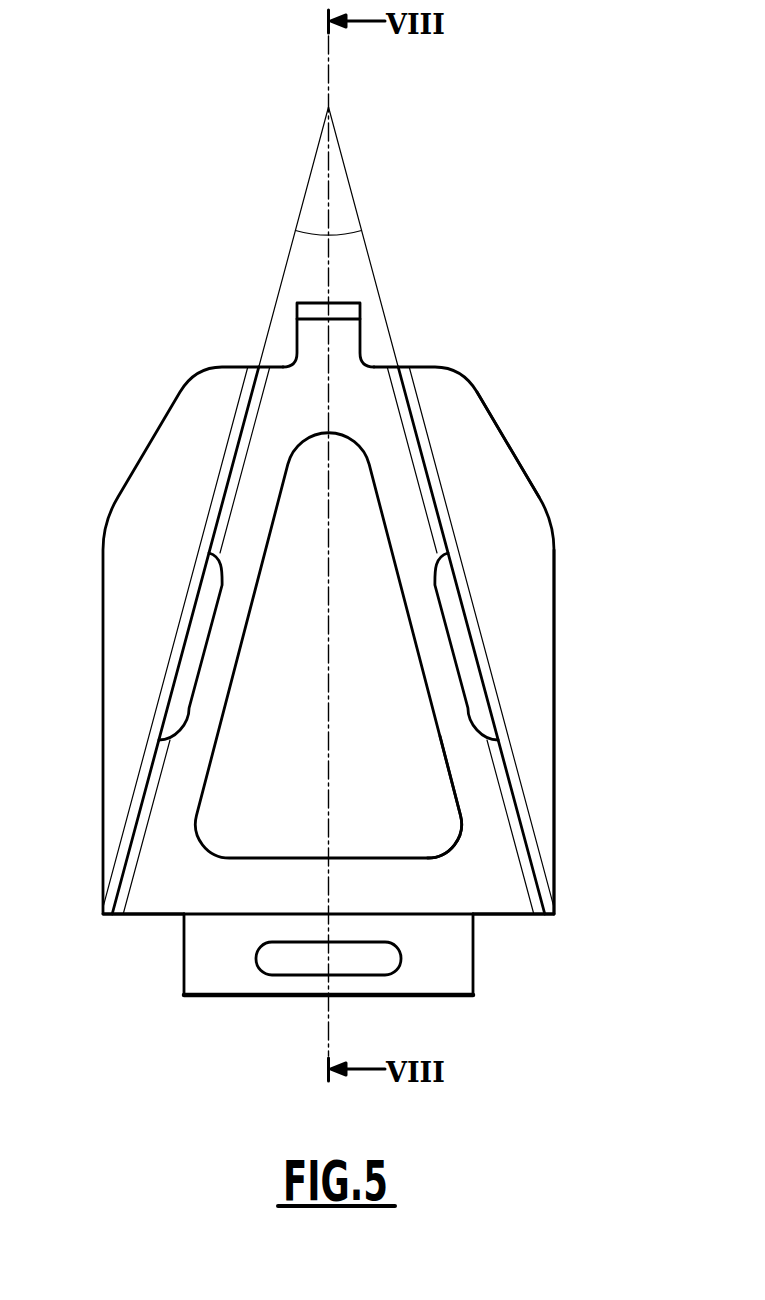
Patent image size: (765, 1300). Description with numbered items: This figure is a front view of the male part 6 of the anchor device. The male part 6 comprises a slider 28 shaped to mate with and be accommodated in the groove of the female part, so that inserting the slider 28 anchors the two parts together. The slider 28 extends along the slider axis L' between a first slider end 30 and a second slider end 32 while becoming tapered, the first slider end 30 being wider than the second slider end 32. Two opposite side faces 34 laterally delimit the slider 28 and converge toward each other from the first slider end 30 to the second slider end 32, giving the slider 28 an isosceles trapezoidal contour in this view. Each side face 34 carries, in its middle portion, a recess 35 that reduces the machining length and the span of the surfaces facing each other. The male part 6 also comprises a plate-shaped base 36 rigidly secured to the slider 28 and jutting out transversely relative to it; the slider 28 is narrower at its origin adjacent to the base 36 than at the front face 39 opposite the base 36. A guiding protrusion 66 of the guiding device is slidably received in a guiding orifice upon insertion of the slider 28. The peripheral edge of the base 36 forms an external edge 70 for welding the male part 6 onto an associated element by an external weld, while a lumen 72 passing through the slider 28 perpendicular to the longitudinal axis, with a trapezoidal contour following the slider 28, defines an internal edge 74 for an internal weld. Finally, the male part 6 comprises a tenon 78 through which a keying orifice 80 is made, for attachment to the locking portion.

The male part 6 is at (168, 277).
The slider 28 is at (432, 424).
The first slider end 30 is at (507, 915).
The second slider end 32 is at (360, 378).
The side faces 34 is at (227, 478).
The recess 35 is at (197, 680).
The base 36 is at (510, 597).
The front face 39 is at (152, 893).
The guiding protrusion 66 is at (312, 330).
The external edge 70 is at (555, 747).
The lumen 72 is at (295, 783).
The internal edge 74 is at (449, 771).
The tenon 78 is at (216, 963).
The keying orifice 80 is at (281, 963).
The slider axis L' is at (350, 546).